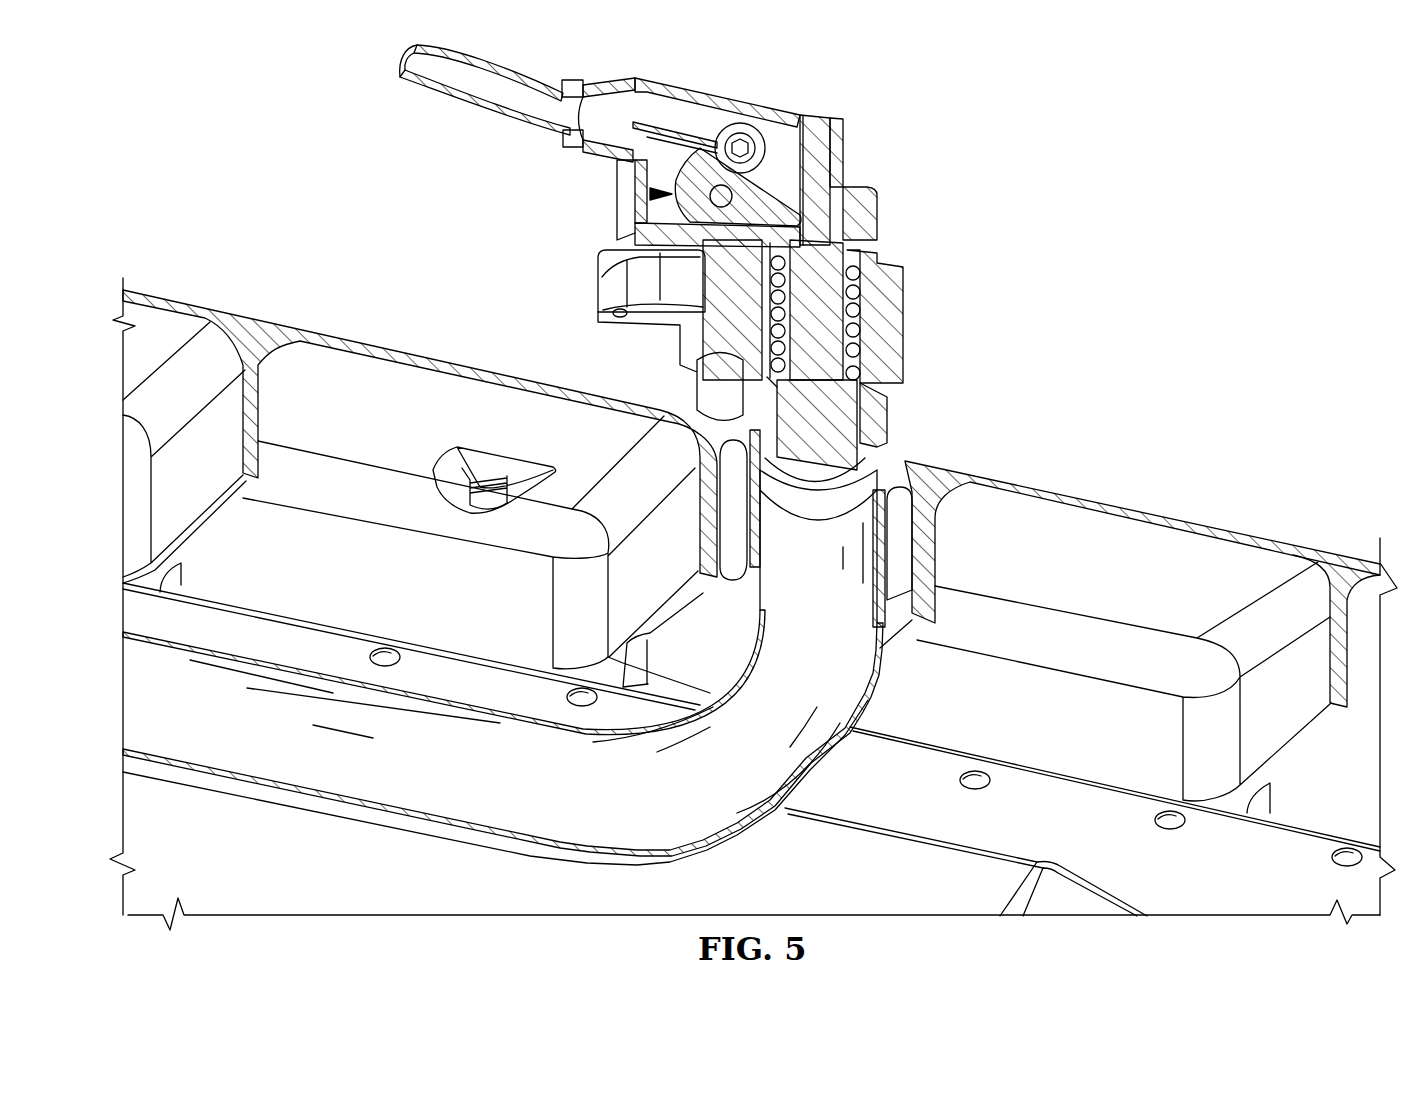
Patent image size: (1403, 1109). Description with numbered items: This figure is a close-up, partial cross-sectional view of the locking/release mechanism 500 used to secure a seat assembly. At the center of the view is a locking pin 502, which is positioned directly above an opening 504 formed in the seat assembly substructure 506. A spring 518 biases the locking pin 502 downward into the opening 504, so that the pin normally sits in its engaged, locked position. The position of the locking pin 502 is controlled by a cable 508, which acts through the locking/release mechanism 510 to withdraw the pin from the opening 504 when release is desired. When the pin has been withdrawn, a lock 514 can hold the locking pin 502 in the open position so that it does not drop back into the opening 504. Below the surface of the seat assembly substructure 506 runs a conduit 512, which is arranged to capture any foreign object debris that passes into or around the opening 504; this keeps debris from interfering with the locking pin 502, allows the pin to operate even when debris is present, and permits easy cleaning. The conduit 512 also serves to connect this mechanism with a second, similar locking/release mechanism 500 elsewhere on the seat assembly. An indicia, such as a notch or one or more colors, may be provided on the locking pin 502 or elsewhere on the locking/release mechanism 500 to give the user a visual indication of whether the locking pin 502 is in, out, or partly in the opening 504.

The locking/release mechanism 500 is at (959, 194).
The locking pin 502 is at (855, 437).
The opening 504 is at (815, 530).
The seat assembly substructure 506 is at (1136, 507).
The cable 508 is at (460, 103).
The locking/release mechanism 510 is at (652, 194).
The conduit 512 is at (316, 810).
The lock 514 is at (700, 177).
The spring 518 is at (868, 310).